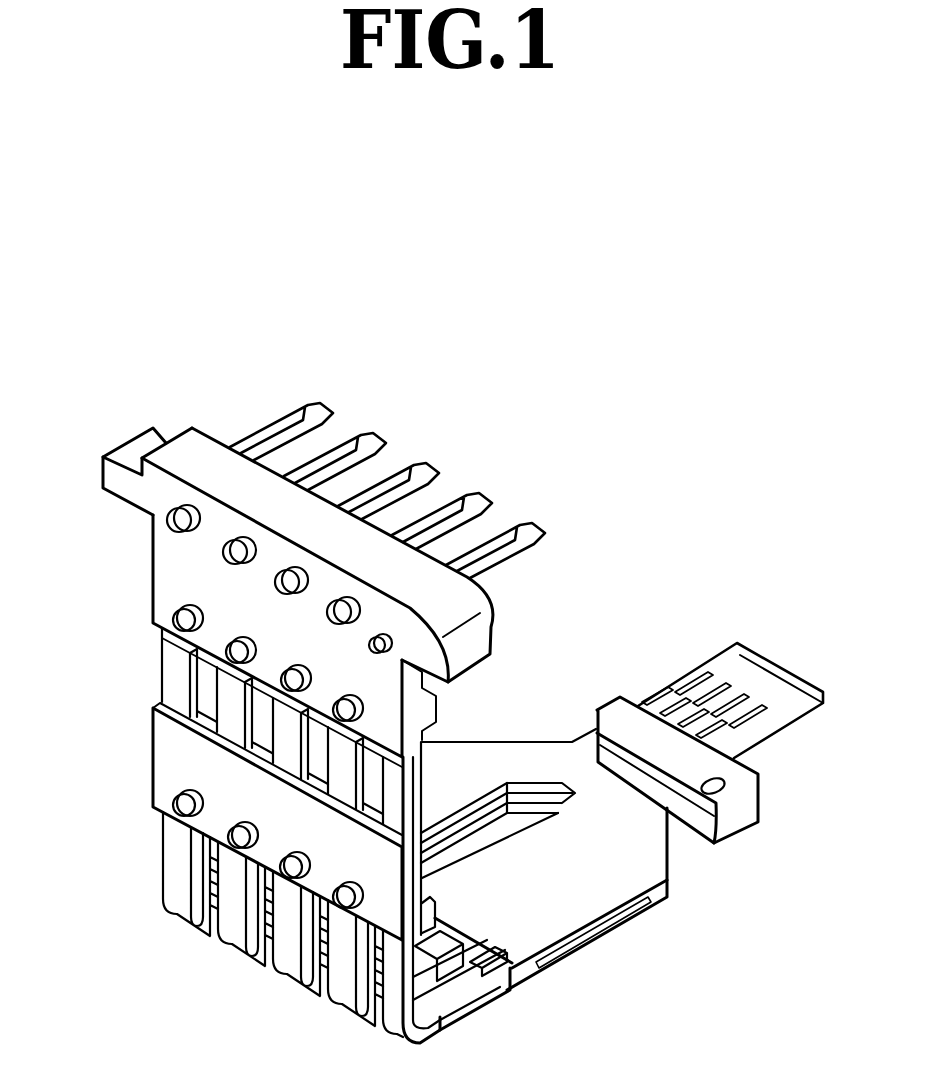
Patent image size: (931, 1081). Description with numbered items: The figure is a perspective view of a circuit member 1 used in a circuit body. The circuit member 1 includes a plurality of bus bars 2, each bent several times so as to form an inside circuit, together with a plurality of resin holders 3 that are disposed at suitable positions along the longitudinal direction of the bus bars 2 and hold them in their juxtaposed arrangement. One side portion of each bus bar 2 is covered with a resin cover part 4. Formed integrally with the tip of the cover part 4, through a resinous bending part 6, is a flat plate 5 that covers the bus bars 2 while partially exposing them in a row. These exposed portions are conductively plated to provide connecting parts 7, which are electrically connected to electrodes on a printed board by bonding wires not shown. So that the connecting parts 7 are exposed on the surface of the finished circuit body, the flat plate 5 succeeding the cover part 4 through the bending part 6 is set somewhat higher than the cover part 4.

The circuit member 1 is at (297, 388).
The bus bars 2 is at (176, 677).
The holders 3 is at (176, 582).
The cover part 4 is at (567, 897).
The flat plate 5 is at (747, 683).
The bending part 6 is at (730, 773).
The connecting parts 7 is at (687, 713).